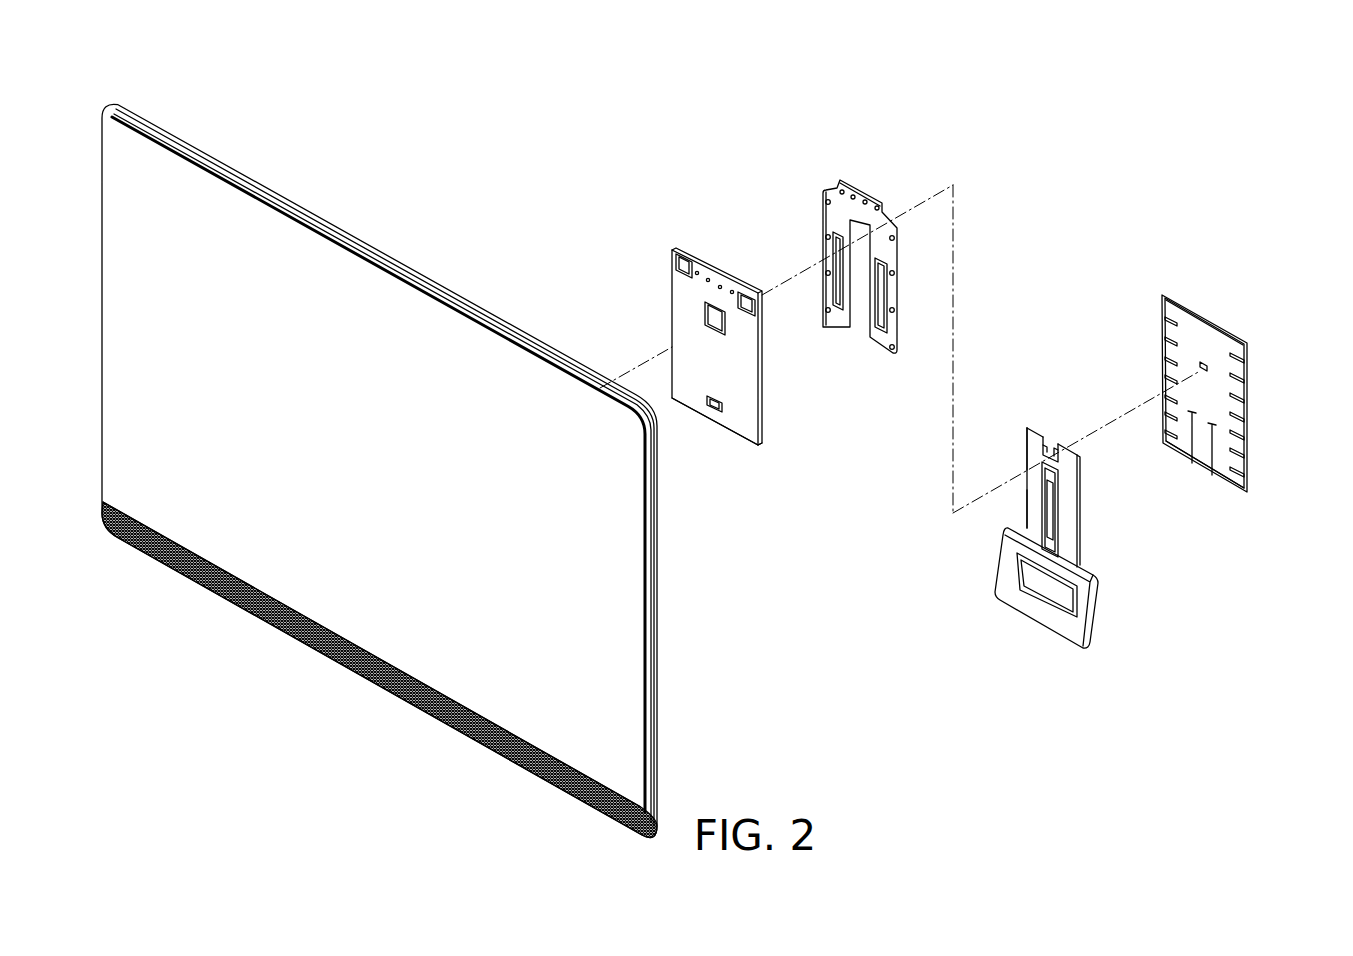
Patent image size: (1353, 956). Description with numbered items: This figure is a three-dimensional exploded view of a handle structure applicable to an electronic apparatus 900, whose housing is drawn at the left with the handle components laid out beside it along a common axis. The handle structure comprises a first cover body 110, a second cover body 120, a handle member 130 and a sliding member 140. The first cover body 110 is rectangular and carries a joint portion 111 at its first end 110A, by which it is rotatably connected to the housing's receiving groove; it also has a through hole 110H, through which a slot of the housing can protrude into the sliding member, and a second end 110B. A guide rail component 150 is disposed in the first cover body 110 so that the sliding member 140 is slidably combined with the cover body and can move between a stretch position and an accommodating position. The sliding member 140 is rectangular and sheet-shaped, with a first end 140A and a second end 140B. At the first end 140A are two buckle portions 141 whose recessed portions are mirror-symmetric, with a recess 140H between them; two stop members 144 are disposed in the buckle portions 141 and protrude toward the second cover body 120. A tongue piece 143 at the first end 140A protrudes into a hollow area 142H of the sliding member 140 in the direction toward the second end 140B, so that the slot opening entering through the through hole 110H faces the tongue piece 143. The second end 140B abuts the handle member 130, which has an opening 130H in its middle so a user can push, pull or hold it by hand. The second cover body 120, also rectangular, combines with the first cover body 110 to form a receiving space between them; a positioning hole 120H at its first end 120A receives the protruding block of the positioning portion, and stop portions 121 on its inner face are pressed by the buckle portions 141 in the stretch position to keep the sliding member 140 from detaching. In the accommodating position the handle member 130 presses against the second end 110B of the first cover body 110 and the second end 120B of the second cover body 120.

The electronic apparatus 900 is at (259, 168).
The first cover body 110 is at (664, 289).
The joint portion 111 is at (700, 258).
The first end of the first cover body 110A is at (757, 310).
The through hole 110H is at (713, 415).
The second end of the first cover body 110B is at (758, 448).
The guide rail component 150 is at (808, 205).
The sliding member 140 is at (1057, 449).
The buckle portion 141 is at (1040, 436).
The stop member 144 is at (1044, 430).
The recess 140H is at (1054, 442).
The first end of the sliding member 140A is at (1030, 442).
The tongue piece 143 is at (1058, 473).
The hollow area 142H is at (1053, 530).
The second end of the sliding member 140B is at (1035, 525).
The handle member 130 is at (1077, 619).
The opening 130H is at (1050, 592).
The second cover body 120 is at (1257, 373).
The first end of the second cover body 120A is at (1227, 347).
The positioning hole 120H is at (1207, 367).
The stop portion 121 is at (1213, 426).
The second end of the second cover body 120B is at (1222, 462).